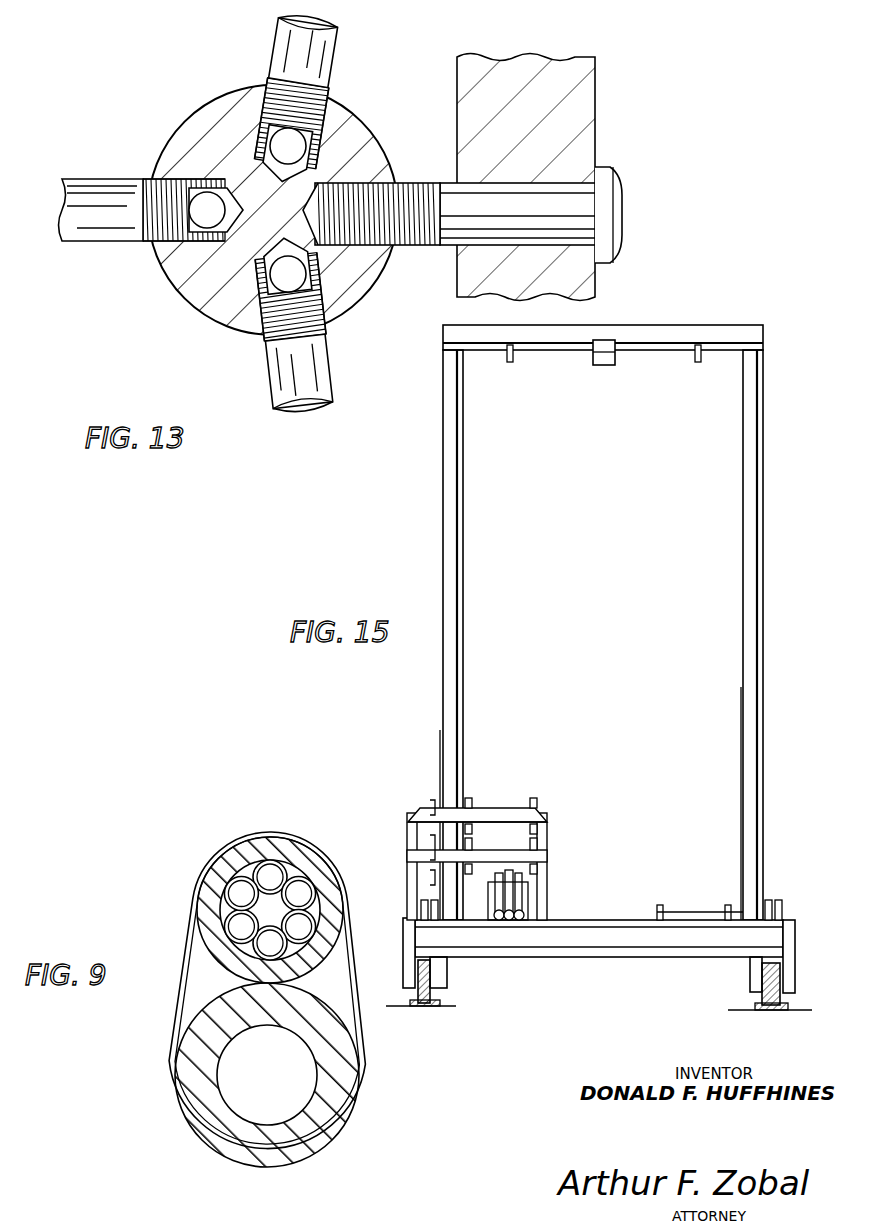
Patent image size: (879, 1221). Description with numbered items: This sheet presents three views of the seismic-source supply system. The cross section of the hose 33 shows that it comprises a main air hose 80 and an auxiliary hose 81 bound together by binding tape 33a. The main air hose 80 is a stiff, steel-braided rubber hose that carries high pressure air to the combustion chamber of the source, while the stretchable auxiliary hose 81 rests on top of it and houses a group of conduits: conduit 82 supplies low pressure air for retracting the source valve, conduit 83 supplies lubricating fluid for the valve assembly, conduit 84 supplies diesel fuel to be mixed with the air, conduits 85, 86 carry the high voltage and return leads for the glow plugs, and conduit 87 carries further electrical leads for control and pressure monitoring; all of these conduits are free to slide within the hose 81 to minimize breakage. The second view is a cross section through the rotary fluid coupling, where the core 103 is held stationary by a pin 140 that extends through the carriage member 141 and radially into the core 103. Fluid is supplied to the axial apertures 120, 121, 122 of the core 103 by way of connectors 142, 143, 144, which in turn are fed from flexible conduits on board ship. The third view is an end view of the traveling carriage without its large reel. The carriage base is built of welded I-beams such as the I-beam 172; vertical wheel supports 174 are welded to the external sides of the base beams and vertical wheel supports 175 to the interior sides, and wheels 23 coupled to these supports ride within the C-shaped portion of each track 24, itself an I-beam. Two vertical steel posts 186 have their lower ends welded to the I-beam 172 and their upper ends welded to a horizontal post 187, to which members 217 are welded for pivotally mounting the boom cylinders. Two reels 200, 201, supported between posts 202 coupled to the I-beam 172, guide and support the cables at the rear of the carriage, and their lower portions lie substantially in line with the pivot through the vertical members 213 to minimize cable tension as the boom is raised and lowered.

In FIG. 13, the core 103 is at (170, 284).
In FIG. 13, the aperture 120 is at (204, 205).
In FIG. 13, the aperture 121 is at (284, 280).
In FIG. 13, the aperture 122 is at (285, 142).
In FIG. 13, the pin 140 is at (623, 186).
In FIG. 13, the carriage member 141 is at (514, 120).
In FIG. 13, the connector 142 is at (112, 178).
In FIG. 13, the connector 143 is at (333, 357).
In FIG. 13, the connector 144 is at (336, 61).
In FIG. 15, the horizontal post 187 is at (668, 325).
In FIG. 15, the vertical steel posts 186 is at (464, 553).
In FIG. 15, the members 217 is at (510, 362).
In FIG. 15, the I-beam 172 is at (625, 957).
In FIG. 15, the vertical wheel supports 174 is at (403, 975).
In FIG. 15, the vertical wheel supports 175 is at (447, 976).
In FIG. 15, the wheels 23 is at (418, 993).
In FIG. 15, the track 24 is at (425, 1007).
In FIG. 15, the vertical members 213 is at (425, 900).
In FIG. 15, the reel 200 is at (505, 870).
In FIG. 15, the reel 201 is at (518, 873).
In FIG. 15, the posts 202 is at (503, 918).
In FIG. 9, the hose 33 is at (242, 990).
In FIG. 9, the binding tape 33a is at (178, 1014).
In FIG. 9, the main air hose 80 is at (336, 1118).
In FIG. 9, the auxiliary hose 81 is at (205, 900).
In FIG. 9, the conduit 82 is at (230, 930).
In FIG. 9, the conduit 83 is at (282, 950).
In FIG. 9, the conduit 84 is at (312, 925).
In FIG. 9, the conduit 85 is at (266, 862).
In FIG. 9, the conduit 86 is at (312, 868).
In FIG. 9, the conduit 87 is at (232, 884).